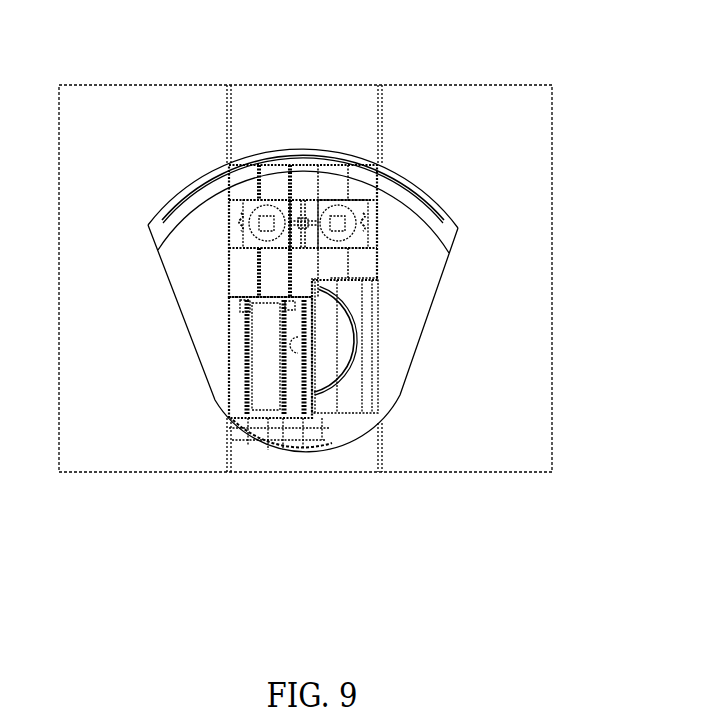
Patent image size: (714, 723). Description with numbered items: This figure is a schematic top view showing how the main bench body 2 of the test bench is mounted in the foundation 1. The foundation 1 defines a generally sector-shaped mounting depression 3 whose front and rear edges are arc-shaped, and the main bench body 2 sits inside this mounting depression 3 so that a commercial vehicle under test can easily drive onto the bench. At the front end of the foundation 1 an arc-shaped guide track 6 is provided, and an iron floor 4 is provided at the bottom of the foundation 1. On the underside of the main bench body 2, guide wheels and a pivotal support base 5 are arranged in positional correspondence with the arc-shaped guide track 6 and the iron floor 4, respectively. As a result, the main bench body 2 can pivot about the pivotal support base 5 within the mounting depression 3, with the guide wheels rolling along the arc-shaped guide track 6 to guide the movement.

The foundation 1 is at (152, 118).
The main bench body 2 is at (300, 173).
The mounting depression 3 is at (427, 298).
The iron floor 4 is at (373, 370).
The pivotal support base 5 is at (345, 370).
The arc-shaped guide track 6 is at (410, 190).